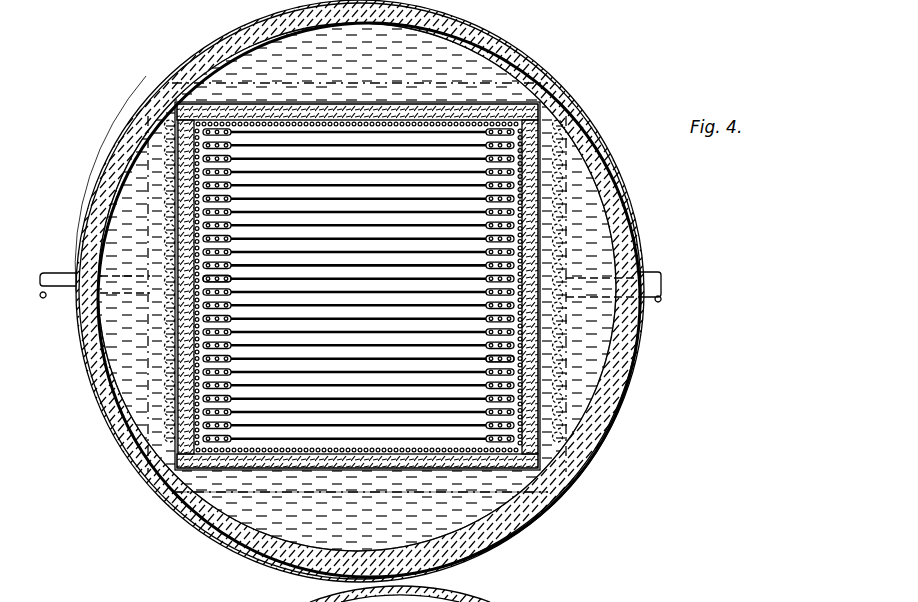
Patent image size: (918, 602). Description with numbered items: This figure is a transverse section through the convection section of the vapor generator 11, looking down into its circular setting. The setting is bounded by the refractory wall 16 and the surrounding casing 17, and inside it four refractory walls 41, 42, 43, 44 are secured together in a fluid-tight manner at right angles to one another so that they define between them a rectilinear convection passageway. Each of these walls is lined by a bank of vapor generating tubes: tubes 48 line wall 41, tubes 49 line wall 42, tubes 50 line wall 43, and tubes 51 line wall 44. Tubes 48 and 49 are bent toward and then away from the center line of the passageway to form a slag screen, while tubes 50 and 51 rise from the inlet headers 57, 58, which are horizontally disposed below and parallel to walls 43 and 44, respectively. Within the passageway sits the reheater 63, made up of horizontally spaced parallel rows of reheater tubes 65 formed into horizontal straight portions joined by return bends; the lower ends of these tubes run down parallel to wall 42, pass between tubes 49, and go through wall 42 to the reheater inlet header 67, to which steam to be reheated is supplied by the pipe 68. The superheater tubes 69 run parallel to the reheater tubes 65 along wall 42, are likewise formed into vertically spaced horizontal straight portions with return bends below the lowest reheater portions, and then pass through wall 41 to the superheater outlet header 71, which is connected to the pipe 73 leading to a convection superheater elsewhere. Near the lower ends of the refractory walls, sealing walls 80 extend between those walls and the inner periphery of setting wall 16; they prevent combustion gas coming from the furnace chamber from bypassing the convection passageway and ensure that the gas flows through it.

The vapor generator 11 is at (612, 98).
The refractory wall 16 is at (622, 348).
The casing 17 is at (638, 320).
The refractory wall 41 is at (522, 335).
The refractory wall 42 is at (186, 305).
The refractory wall 43 is at (305, 103).
The refractory wall 44 is at (488, 171).
The vapor generating tubes 48 is at (532, 190).
The vapor generating tubes 49 is at (198, 255).
The vapor generating tubes 50 is at (376, 130).
The vapor generating tubes 51 is at (424, 472).
The inlet header 57 is at (347, 83).
The inlet header 58 is at (388, 495).
The reheater 63 is at (480, 272).
The reheater tubes 65 is at (163, 210).
The reheater inlet header 67 is at (80, 207).
The pipe 68 is at (55, 272).
The superheater tubes 69 is at (238, 271).
The superheater outlet header 71 is at (600, 396).
The pipe 73 is at (663, 296).
The sealing walls 80 is at (463, 62).